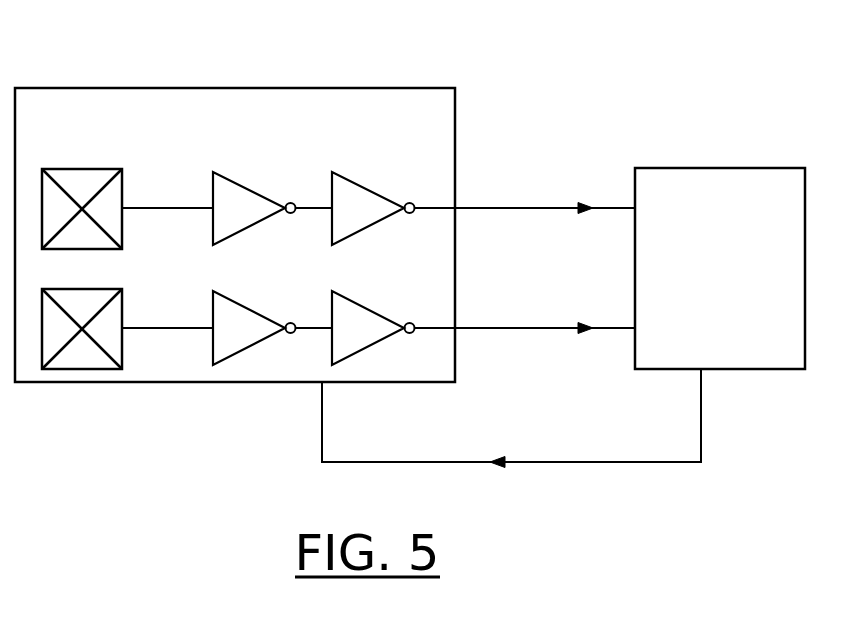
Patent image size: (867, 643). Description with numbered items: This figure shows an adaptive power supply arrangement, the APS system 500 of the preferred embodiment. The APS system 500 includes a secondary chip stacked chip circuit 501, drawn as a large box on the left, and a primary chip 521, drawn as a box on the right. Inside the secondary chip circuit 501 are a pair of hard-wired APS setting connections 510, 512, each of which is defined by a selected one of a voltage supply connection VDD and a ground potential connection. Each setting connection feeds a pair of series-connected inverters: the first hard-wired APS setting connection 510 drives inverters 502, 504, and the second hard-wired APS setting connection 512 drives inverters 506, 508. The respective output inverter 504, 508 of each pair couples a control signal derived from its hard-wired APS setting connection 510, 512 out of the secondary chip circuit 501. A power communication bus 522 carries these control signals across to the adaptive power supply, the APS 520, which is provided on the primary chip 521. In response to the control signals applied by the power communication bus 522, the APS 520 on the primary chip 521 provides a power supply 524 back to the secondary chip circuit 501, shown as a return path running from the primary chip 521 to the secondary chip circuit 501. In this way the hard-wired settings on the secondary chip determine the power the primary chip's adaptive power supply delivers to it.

The adaptive power supply (APS) system 500 is at (502, 38).
The secondary chip stacked chip circuit 501 is at (259, 142).
The inverter 502 is at (272, 208).
The output inverter 504 is at (373, 208).
The inverter 506 is at (272, 328).
The output inverter 508 is at (373, 328).
The hard-wired APS setting connection 510 is at (99, 169).
The hard-wired APS setting connection 512 is at (105, 289).
The adaptive power supply (APS) 520 is at (720, 267).
The primary chip 521 is at (704, 222).
The power communication bus 522 is at (528, 217).
The power supply 524 is at (511, 418).